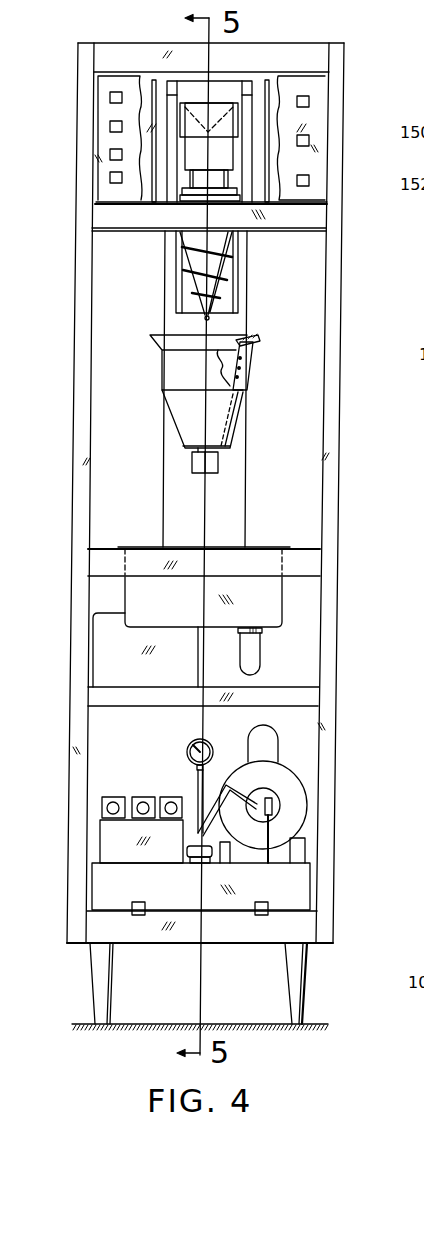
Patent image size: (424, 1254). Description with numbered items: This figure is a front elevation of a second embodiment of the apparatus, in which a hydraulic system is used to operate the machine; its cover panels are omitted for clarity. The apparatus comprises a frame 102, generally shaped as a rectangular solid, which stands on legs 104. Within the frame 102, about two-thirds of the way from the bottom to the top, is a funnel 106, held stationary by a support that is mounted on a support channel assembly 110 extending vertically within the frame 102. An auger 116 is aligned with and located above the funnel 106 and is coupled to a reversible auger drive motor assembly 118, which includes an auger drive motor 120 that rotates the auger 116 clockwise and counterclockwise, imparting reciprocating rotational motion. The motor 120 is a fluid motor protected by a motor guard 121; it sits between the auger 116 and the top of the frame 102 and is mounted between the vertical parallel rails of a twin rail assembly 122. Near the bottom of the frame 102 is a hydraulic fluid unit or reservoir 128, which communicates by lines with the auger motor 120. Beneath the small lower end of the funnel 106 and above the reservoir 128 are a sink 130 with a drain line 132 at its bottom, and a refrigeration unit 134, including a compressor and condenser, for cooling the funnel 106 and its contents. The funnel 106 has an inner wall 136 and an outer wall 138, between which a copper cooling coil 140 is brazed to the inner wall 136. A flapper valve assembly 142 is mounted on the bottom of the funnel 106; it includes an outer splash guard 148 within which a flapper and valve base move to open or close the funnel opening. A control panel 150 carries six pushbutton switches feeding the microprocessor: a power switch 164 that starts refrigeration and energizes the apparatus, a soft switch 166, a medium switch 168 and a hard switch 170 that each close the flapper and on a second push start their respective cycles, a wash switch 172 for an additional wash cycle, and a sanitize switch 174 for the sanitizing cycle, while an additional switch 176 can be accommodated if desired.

The frame 102 is at (350, 228).
The legs 104 is at (97, 972).
The funnel 106 is at (258, 402).
The support channel assembly 110 is at (236, 482).
The auger 116 is at (211, 275).
The reversible auger drive motor assembly 118 is at (226, 81).
The auger drive motor 120 is at (222, 145).
The motor guard 121 is at (152, 147).
The twin rail assembly 122 is at (185, 276).
The hydraulic fluid unit or reservoir 128 is at (297, 790).
The sink 130 is at (260, 596).
The drain line 132 is at (253, 658).
The refrigeration unit 134 is at (105, 662).
The inner wall 136 is at (220, 354).
The outer wall 138 is at (229, 382).
The copper cooling coil 140 is at (248, 367).
The flapper valve assembly 142 is at (199, 481).
The outer splash guard 148 is at (192, 458).
The control panel 150 is at (312, 87).
The power switch 164 is at (110, 97).
The soft switch 166 is at (110, 126).
The medium switch 168 is at (110, 155).
The hard switch 170 is at (114, 184).
The wash switch 172 is at (309, 101).
The sanitize switch 174 is at (309, 141).
The additional switch 176 is at (309, 180).